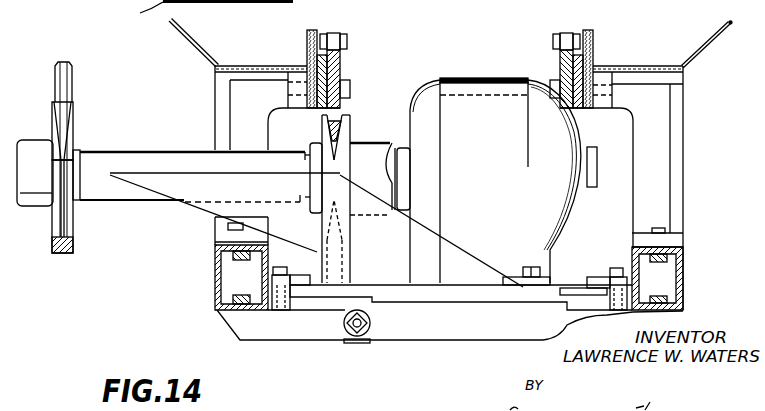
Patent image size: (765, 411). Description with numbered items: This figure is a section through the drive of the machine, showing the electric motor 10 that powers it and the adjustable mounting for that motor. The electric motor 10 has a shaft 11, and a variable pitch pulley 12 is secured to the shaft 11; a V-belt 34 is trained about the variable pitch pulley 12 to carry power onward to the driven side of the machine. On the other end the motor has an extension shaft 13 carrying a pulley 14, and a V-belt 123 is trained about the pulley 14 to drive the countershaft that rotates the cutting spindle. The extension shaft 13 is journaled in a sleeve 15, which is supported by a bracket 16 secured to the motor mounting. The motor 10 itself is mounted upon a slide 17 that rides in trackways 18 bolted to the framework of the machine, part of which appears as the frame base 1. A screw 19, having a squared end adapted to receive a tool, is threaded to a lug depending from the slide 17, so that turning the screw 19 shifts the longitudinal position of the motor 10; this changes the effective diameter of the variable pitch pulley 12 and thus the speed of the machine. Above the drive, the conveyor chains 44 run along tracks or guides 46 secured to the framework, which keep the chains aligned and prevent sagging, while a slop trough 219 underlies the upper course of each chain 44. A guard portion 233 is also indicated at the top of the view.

The frame base 1 is at (690, 283).
The electric motor 10 is at (502, 80).
The shaft 11 is at (393, 147).
The variable pitch pulley 12 is at (350, 133).
The extension shaft 13 is at (75, 147).
The pulley 14 is at (73, 113).
The sleeve 15 is at (186, 110).
The bracket 16 is at (200, 206).
The slide 17 is at (427, 292).
The trackways 18 is at (308, 296).
The screw 19 is at (355, 341).
The V-belt 34 is at (329, 124).
The conveyor chain 44 is at (342, 25).
The track or guide 46 is at (338, 72).
The V-belt 123 is at (55, 84).
The slop trough 219 is at (200, 49).
The guard 233 is at (140, 13).